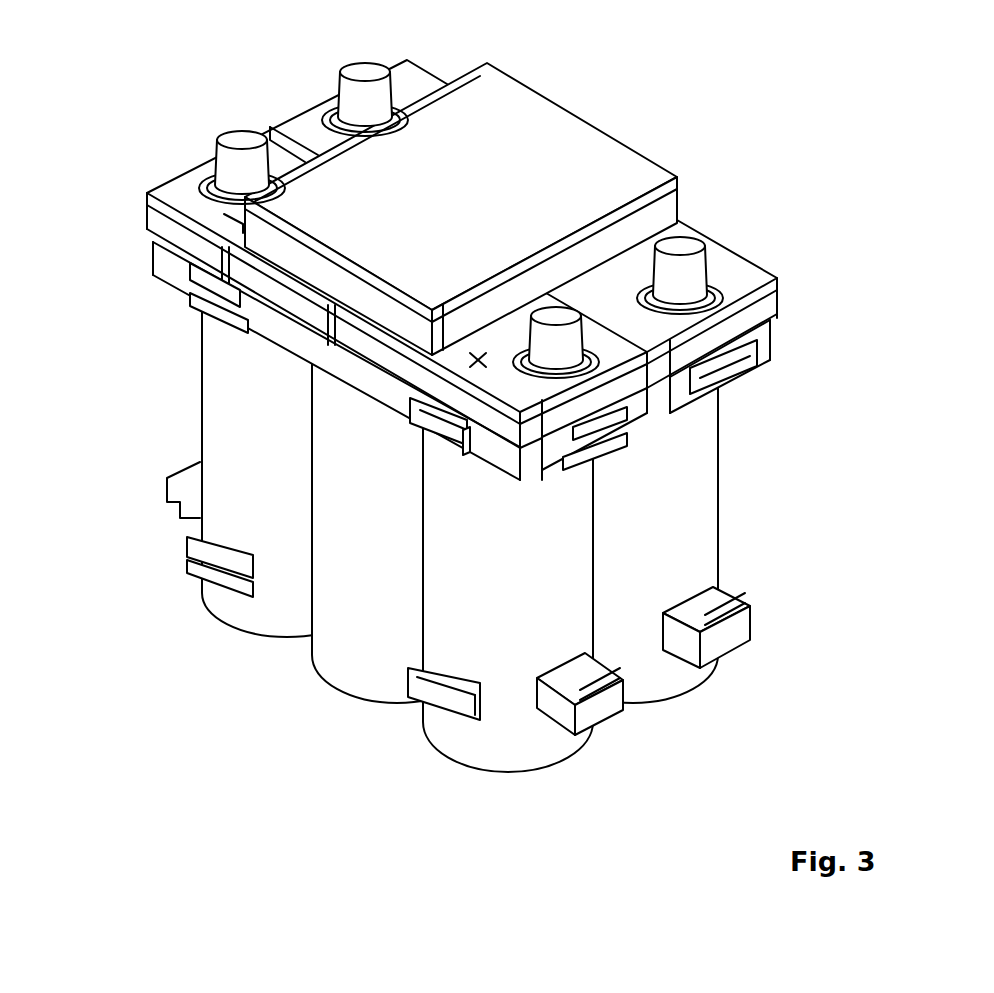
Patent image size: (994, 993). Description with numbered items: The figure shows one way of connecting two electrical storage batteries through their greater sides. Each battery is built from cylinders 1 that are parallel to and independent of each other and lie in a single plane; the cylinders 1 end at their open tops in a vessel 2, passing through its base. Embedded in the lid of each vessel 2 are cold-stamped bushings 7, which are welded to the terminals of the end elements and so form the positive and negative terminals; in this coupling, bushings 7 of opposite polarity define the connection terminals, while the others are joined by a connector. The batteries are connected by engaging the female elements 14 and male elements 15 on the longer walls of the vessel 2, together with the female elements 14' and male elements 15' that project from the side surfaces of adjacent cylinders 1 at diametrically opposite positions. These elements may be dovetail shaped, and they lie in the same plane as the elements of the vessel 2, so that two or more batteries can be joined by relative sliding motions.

The cylinder 1 is at (353, 658).
The vessel 2 is at (163, 259).
The bushing 7 is at (237, 137).
The female element 14 is at (366, 546).
The female element 14' is at (165, 551).
The male element 15 is at (646, 504).
The male element 15' is at (438, 777).